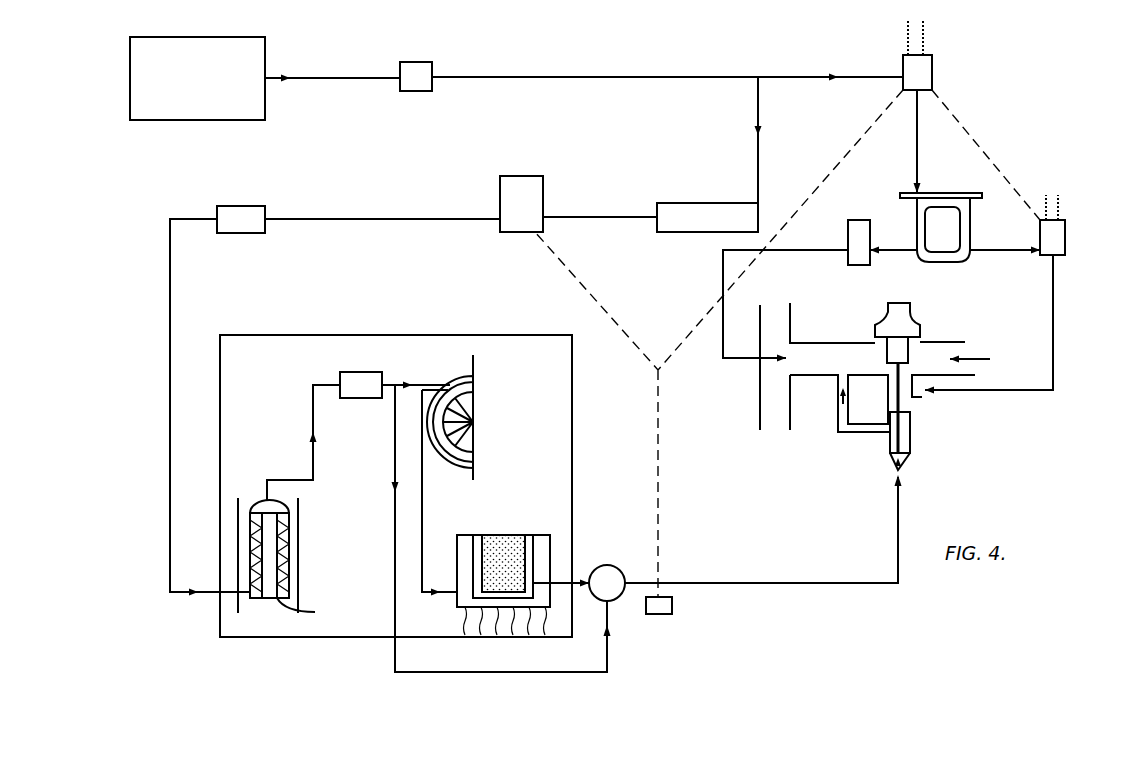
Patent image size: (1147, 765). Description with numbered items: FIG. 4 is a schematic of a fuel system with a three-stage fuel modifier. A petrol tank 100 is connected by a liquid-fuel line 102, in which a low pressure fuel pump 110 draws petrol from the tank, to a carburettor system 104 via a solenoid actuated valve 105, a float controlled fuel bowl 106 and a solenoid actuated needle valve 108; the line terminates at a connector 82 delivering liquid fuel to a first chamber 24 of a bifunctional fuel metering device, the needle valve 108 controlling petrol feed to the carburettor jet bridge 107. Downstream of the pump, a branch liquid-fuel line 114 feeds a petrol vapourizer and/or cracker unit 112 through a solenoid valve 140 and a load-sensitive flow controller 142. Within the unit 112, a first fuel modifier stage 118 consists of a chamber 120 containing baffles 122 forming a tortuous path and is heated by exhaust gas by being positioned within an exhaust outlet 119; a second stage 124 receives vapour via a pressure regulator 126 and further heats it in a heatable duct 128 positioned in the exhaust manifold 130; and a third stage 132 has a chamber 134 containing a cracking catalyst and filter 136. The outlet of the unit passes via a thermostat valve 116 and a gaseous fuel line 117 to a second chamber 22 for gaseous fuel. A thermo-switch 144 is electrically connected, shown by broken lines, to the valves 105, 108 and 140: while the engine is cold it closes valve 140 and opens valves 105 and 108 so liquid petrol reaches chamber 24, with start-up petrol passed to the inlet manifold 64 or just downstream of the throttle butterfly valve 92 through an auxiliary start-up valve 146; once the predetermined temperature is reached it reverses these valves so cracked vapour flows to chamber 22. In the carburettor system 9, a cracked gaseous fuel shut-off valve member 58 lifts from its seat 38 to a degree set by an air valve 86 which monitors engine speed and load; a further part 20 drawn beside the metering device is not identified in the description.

The petrol tank 100 is at (257, 40).
The low pressure fuel pump 110 is at (433, 70).
The liquid-fuel line 102 is at (678, 80).
The branch liquid-fuel line 114 is at (757, 153).
The exhaust manifold 130 is at (735, 203).
The solenoid valve 140 is at (500, 190).
The flow controller 142 is at (266, 213).
The solenoid actuated valve 105 is at (933, 72).
The float controlled fuel bowl 106 is at (972, 248).
The solenoid actuated needle valve 108 is at (1065, 240).
The auxiliary start-up valve 146 is at (862, 220).
The thermo-switch 144 is at (672, 605).
The throttle butterfly valve 92 is at (818, 375).
The first chamber 24 is at (864, 399).
The air valve 86 is at (908, 345).
The inlet manifold 64 is at (955, 342).
The carburettor jet bridge 107 is at (897, 377).
The carburettor system 104 is at (1018, 363).
The connector 82 is at (1030, 390).
The valve seat 20 is at (900, 403).
The second chamber 22 is at (884, 440).
The cracked gaseous fuel shut-off valve member 58 is at (890, 450).
The seat 38 is at (893, 468).
The carburettor system 9 is at (925, 449).
The gaseous fuel line 117 is at (835, 583).
The petrol vapourizer and/or cracker unit 112 is at (350, 640).
The pressure regulator 126 is at (348, 372).
The first fuel modifier stage 118 is at (303, 540).
The chamber 120 is at (289, 574).
The exhaust outlet 119 is at (300, 525).
The baffles 122 is at (321, 607).
The second stage 124 is at (489, 405).
The heatable duct 128 is at (455, 470).
The third stage 132 is at (505, 520).
The chamber 134 is at (533, 554).
The cracking catalyst and filter 136 is at (508, 546).
The thermostat valve 116 is at (630, 565).